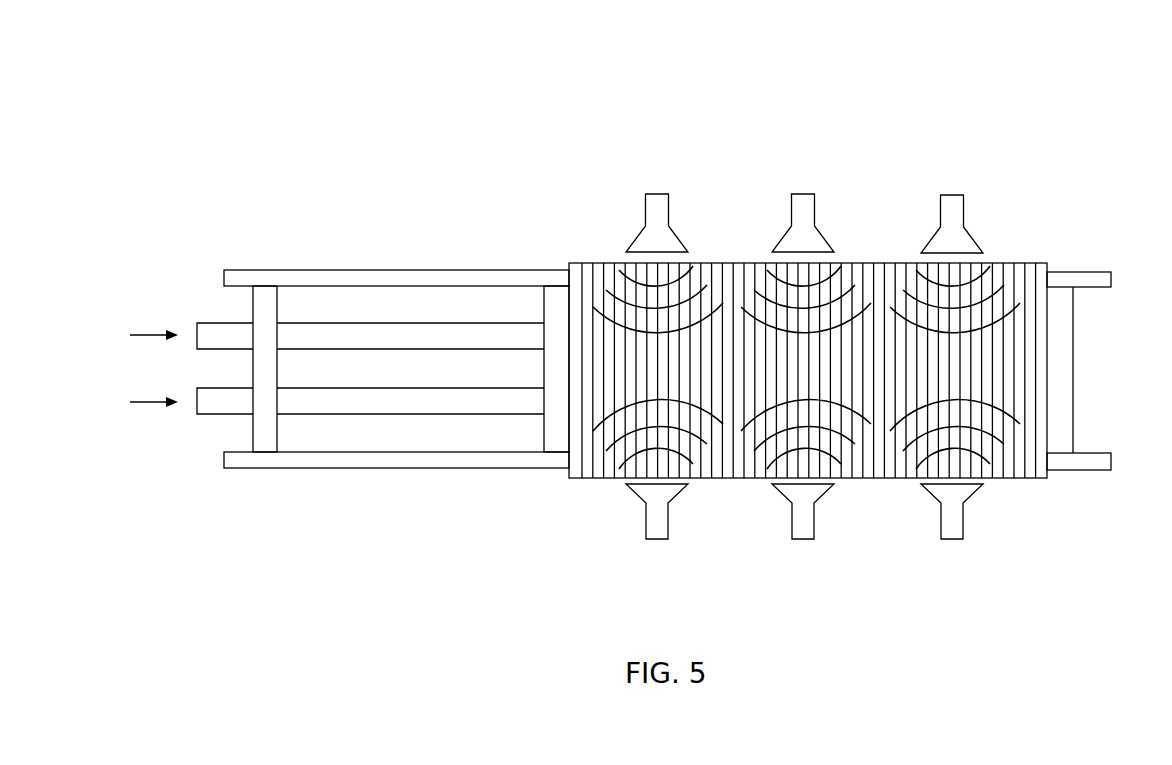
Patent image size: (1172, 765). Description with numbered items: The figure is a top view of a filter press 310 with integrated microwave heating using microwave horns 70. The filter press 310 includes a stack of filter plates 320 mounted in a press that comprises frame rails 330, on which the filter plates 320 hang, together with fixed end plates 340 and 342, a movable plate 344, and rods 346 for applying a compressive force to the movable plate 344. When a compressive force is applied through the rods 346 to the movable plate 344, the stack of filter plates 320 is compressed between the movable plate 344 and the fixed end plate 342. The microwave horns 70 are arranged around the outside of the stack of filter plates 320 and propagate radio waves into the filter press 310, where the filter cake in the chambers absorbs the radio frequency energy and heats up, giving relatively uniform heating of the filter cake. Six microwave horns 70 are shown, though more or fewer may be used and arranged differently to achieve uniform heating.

The filter press 310 is at (512, 135).
The filter plates 320 is at (587, 457).
The frame rails 330 is at (415, 272).
The fixed end plate 340 is at (262, 306).
The fixed end plate 342 is at (1063, 408).
The movable plate 344 is at (553, 315).
The rods 346 is at (232, 402).
The microwave horns 70 is at (803, 221).